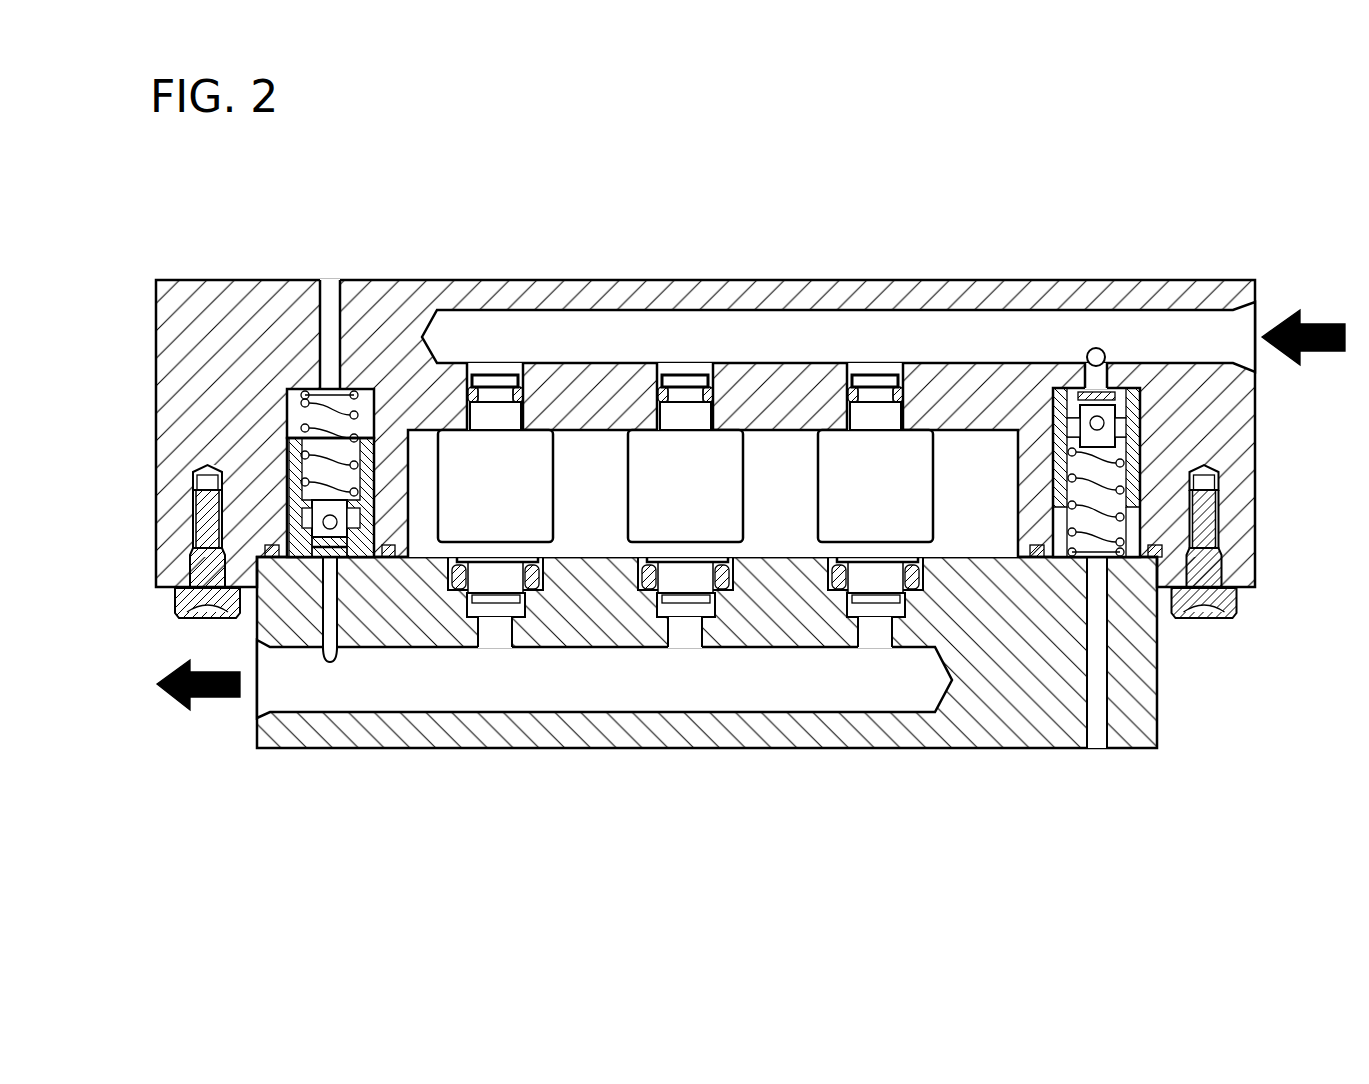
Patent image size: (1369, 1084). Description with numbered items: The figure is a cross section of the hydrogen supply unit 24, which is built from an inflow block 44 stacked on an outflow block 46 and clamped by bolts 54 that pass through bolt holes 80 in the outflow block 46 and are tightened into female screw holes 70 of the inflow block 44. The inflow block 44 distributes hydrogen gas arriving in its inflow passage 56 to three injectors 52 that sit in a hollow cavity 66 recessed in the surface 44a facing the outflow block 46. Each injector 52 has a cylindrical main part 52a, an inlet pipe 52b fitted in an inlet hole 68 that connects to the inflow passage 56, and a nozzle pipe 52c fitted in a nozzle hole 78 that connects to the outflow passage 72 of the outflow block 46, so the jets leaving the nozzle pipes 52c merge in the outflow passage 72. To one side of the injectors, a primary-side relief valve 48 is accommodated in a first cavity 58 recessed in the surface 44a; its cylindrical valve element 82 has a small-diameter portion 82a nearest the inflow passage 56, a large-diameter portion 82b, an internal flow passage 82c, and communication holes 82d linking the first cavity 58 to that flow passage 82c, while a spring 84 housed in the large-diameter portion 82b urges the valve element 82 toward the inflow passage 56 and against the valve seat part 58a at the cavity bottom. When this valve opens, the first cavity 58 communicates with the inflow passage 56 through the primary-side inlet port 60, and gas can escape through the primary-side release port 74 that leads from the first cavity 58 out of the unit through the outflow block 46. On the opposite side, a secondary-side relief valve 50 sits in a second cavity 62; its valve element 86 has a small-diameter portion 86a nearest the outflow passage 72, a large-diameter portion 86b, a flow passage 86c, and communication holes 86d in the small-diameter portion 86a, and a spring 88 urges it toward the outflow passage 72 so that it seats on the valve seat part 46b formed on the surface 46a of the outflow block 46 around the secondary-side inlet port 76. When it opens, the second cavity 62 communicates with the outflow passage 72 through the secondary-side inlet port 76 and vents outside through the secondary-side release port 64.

The hydrogen supply unit 24 is at (1052, 203).
The inflow block 44 is at (1268, 482).
The surface of the inflow block 44a is at (1240, 560).
The outflow block 46 is at (250, 745).
The surface of the outflow block 46a is at (262, 558).
The valve seat part 46b is at (352, 560).
The primary-side relief valve 48 is at (1315, 378).
The secondary-side relief valve 50 is at (98, 356).
The injector 52 is at (561, 518).
The main part 52a is at (518, 503).
The inlet pipe 52b is at (481, 383).
The nozzle pipe 52c is at (501, 600).
The bolt 54 is at (176, 612).
The inflow passage 56 is at (1018, 352).
The first cavity 58 is at (1082, 395).
The valve seat part 58a is at (1130, 392).
The primary-side inlet port 60 is at (1098, 362).
The second cavity 62 is at (300, 395).
The secondary-side release port 64 is at (336, 330).
The cavity 66 is at (412, 450).
The inlet hole 68 is at (501, 372).
The female screw hole 70 is at (190, 478).
The outflow passage 72 is at (609, 695).
The primary-side release port 74 is at (1097, 750).
The secondary-side inlet port 76 is at (330, 650).
The nozzle hole 78 is at (484, 625).
The bolt hole 80 is at (178, 596).
The valve element 82 is at (1140, 412).
The small-diameter portion 82a is at (1050, 418).
The large-diameter portion 82b is at (1165, 565).
The flow passage 82c is at (1093, 500).
The communication hole 82d is at (1058, 470).
The spring 84 is at (1106, 428).
The valve element 86 is at (292, 470).
The small-diameter portion 86a is at (300, 552).
The large-diameter portion 86b is at (372, 450).
The flow passage 86c is at (325, 440).
The communication hole 86d is at (302, 515).
The spring 88 is at (305, 428).